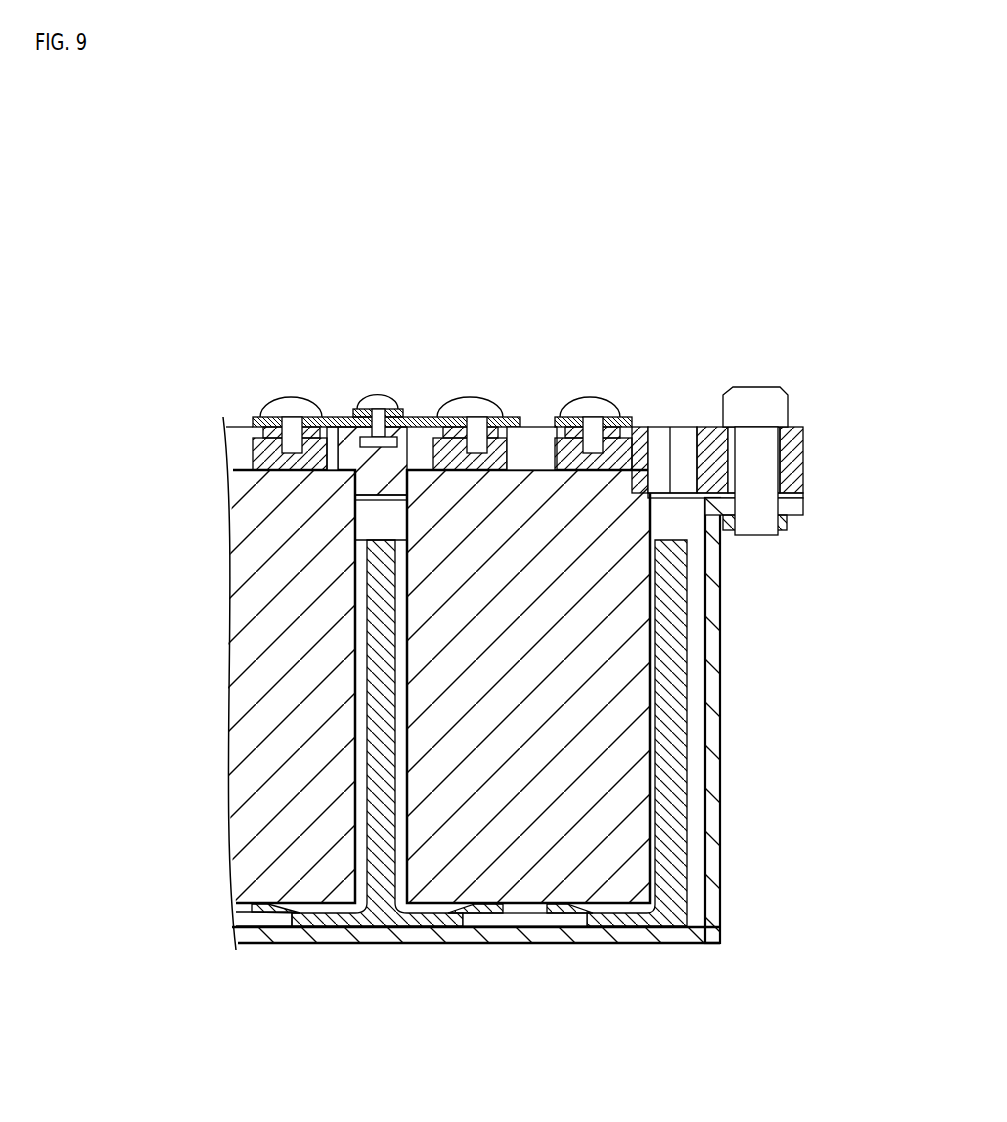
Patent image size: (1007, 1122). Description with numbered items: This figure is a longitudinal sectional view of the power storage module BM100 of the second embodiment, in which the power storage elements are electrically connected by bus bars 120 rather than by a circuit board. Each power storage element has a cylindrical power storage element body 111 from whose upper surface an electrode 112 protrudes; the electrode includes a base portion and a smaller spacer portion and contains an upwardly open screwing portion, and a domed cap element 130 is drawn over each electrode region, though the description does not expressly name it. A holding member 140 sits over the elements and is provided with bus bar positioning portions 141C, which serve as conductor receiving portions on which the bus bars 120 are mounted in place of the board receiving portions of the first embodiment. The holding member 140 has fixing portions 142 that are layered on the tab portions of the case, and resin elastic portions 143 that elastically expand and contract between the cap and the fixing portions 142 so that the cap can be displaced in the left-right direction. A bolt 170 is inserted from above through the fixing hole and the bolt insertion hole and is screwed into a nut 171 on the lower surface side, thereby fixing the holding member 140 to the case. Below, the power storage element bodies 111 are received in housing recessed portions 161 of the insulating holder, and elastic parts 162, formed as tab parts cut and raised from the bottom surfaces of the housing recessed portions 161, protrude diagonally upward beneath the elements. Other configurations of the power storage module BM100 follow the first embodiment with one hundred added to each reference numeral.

The power storage module BM100 is at (703, 120).
The power storage element body 111 is at (540, 471).
The electrode 112 is at (509, 446).
The bus bar 120 is at (343, 418).
The bus bar 130 is at (473, 396).
The holding member 140 is at (325, 418).
The bus bar positioning portion 141C is at (427, 418).
The fixing portion 142 is at (800, 426).
The resin elastic portion 143 is at (682, 426).
The housing recessed portion 161 is at (395, 866).
The elastic part 162 is at (552, 913).
The bolt 170 is at (758, 387).
The nut 171 is at (788, 521).